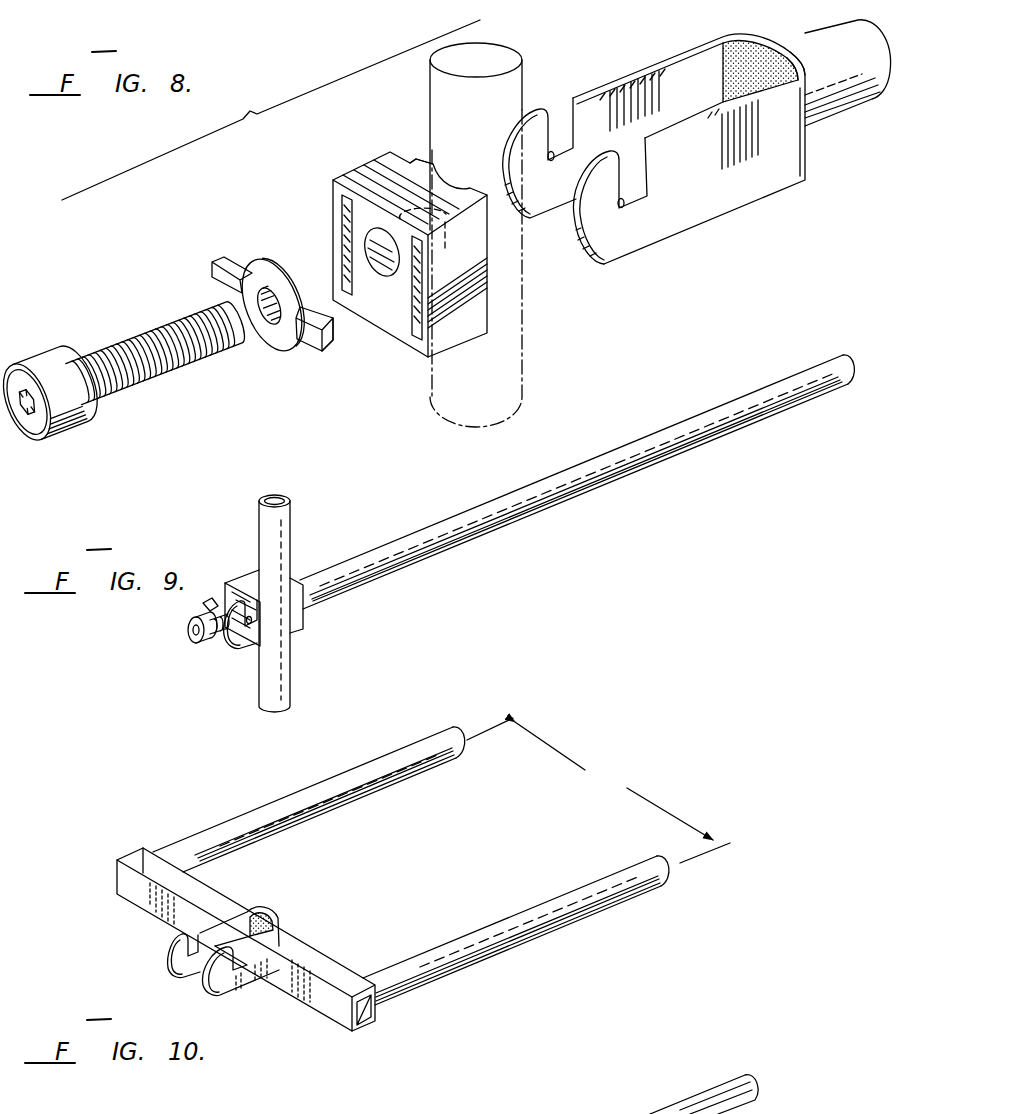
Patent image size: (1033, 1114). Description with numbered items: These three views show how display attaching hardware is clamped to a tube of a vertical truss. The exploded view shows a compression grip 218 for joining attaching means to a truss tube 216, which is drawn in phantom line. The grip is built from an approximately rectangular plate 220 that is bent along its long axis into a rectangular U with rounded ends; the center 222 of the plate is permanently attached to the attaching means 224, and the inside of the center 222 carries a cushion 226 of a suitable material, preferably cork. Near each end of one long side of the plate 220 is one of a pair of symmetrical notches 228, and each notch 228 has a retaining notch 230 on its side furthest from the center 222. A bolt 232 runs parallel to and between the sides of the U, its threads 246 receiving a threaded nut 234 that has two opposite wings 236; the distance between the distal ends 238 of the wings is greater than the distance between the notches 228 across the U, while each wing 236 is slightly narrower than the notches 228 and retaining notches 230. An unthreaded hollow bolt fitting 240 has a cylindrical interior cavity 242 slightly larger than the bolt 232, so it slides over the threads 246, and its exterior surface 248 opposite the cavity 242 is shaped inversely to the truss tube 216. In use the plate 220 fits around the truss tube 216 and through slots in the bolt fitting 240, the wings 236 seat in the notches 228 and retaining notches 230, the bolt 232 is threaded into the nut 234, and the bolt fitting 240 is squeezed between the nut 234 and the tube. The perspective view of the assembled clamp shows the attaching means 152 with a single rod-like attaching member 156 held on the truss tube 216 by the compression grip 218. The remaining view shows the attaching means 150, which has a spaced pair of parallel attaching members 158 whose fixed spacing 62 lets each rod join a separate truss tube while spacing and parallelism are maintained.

In FIG. 10, the attaching means 150 is at (405, 874).
In FIG. 9, the attaching means 152 is at (521, 533).
In FIG. 9, the attaching member 156 is at (538, 508).
In FIG. 10, the attaching member 158 is at (331, 812).
In FIG. 10, the rod spacing dimension 62 is at (598, 790).
In FIG. 8, the truss tube 216 is at (541, 80).
In FIG. 9, the truss tube 216 is at (296, 532).
In FIG. 8, the compression grip 218 is at (283, 418).
In FIG. 9, the compression grip 218 is at (306, 630).
In FIG. 8, the plate 220 is at (659, 139).
In FIG. 8, the center 222 is at (758, 44).
In FIG. 8, the attaching means 224 is at (836, 118).
In FIG. 8, the cushion 226 is at (727, 57).
In FIG. 8, the notch 228 is at (650, 164).
In FIG. 8, the retaining notch 230 is at (412, 332).
In FIG. 8, the bolt 232 is at (72, 420).
In FIG. 8, the threaded nut 234 is at (272, 258).
In FIG. 8, the wing 236 is at (300, 348).
In FIG. 8, the distal end 238 is at (330, 341).
In FIG. 8, the bolt fitting 240 is at (400, 251).
In FIG. 8, the cylindrical interior cavity 242 is at (372, 256).
In FIG. 8, the threads 246 is at (162, 322).
In FIG. 8, the exterior surface 248 is at (390, 162).